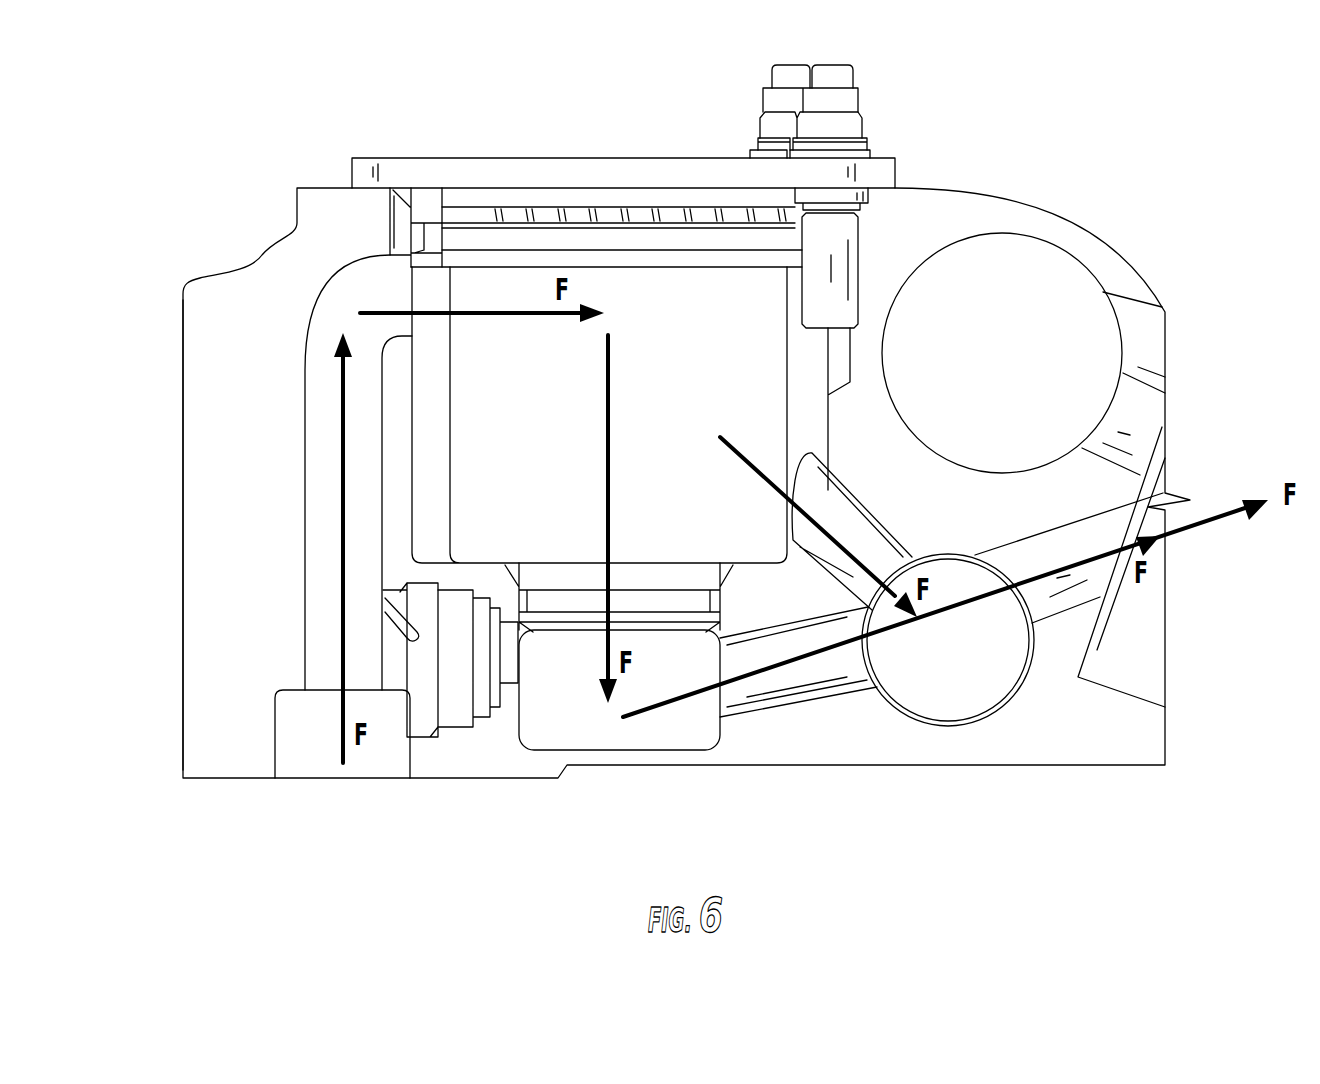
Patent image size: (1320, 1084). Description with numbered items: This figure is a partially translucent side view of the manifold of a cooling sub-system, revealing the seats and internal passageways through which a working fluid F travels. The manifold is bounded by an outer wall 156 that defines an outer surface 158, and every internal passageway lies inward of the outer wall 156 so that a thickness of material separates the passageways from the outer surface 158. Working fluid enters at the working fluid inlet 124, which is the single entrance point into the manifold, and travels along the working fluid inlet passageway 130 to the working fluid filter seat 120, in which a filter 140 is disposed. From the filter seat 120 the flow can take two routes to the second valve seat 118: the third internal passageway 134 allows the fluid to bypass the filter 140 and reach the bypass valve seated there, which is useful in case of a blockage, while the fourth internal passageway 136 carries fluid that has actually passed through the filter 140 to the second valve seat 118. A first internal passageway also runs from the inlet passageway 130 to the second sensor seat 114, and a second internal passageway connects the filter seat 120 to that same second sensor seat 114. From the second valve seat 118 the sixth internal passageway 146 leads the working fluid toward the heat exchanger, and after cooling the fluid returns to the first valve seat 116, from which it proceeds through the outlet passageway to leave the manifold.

The second sensor seat 114 is at (455, 720).
The first valve seat 116 is at (1030, 252).
The second valve seat 118 is at (980, 697).
The working fluid filter seat 120 is at (405, 217).
The working fluid inlet 124 is at (370, 782).
The working fluid inlet passageway 130 is at (305, 493).
The third internal passageway 134 is at (847, 512).
The fourth internal passageway 136 is at (798, 677).
The filter 140 is at (558, 178).
The sixth internal passageway 146 is at (1050, 600).
The outer wall 156 is at (197, 602).
The outer surface 158 is at (178, 427).